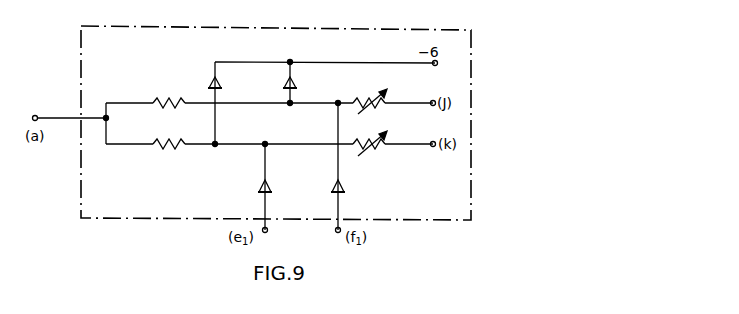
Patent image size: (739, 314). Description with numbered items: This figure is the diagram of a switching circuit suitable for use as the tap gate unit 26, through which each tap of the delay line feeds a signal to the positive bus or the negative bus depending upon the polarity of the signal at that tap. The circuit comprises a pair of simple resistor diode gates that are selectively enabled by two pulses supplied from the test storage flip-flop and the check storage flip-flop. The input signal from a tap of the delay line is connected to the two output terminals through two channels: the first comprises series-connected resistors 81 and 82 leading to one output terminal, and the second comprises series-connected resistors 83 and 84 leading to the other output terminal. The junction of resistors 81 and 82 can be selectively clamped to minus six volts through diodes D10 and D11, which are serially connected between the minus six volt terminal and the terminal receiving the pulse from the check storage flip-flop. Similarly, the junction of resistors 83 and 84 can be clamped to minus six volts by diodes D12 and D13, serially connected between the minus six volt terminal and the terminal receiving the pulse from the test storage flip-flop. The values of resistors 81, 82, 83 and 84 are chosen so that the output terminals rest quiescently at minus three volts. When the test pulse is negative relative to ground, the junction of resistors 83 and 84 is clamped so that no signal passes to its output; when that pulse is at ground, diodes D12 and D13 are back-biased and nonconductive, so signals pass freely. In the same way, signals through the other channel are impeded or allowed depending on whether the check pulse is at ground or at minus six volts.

The tap gate unit 26 is at (81, 46).
The resistor 81 is at (185, 105).
The resistor 82 is at (367, 91).
The resistor 83 is at (185, 148).
The resistor 84 is at (383, 159).
The diode D10 is at (296, 88).
The diode D11 is at (345, 192).
The diode D12 is at (222, 88).
The diode D13 is at (258, 192).